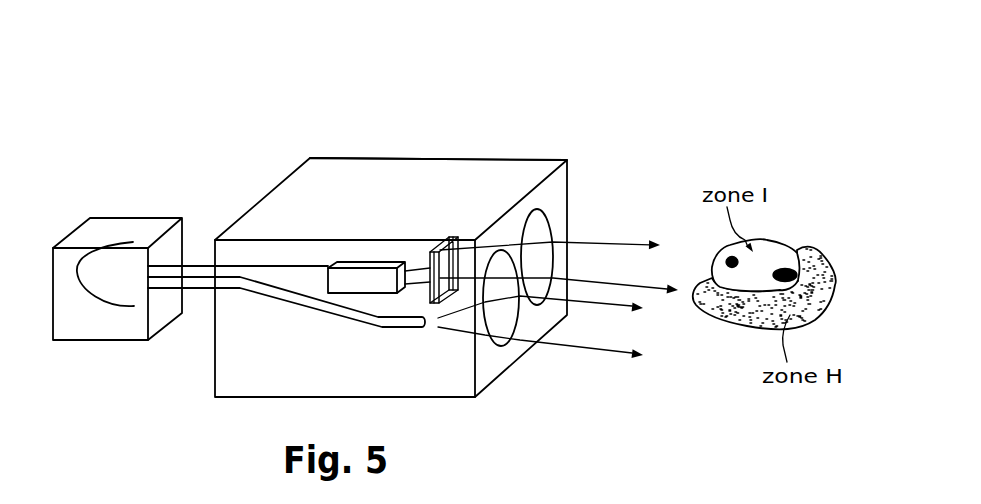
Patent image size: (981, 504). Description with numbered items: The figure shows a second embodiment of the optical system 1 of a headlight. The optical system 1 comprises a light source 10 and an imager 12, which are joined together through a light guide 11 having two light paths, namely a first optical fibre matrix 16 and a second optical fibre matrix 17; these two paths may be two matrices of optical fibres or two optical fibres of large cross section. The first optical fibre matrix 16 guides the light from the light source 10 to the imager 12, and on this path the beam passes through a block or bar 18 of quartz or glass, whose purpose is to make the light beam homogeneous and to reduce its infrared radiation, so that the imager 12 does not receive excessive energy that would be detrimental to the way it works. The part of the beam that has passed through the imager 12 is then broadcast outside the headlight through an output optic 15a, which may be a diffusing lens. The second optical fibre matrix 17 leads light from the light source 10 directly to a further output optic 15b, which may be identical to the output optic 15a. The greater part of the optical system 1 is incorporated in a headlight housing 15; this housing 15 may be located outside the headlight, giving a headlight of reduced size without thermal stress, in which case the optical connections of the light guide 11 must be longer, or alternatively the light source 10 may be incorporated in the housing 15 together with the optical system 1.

The optical system 1 is at (393, 143).
The light source 10 is at (114, 215).
The light guide 11 is at (458, 158).
The imager 12 is at (445, 228).
The headlight housing 15 is at (550, 308).
The output optic 15a is at (545, 222).
The output optic 15b is at (503, 321).
The first optical fibre matrix 16 is at (197, 252).
The second optical fibre matrix 17 is at (198, 303).
The block or bar of quartz or glass 18 is at (360, 255).